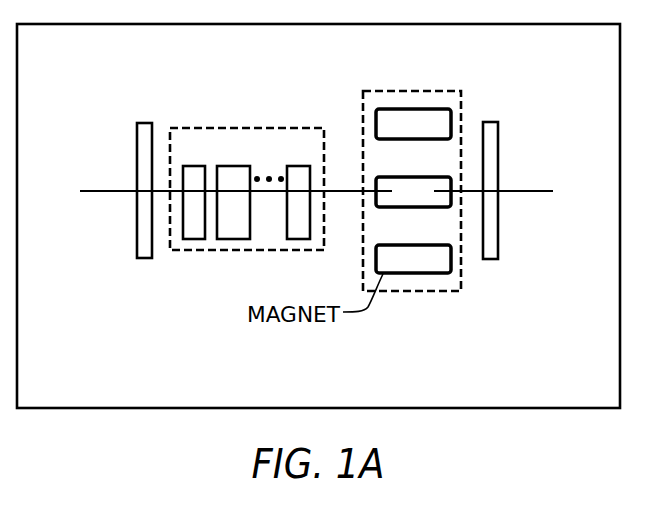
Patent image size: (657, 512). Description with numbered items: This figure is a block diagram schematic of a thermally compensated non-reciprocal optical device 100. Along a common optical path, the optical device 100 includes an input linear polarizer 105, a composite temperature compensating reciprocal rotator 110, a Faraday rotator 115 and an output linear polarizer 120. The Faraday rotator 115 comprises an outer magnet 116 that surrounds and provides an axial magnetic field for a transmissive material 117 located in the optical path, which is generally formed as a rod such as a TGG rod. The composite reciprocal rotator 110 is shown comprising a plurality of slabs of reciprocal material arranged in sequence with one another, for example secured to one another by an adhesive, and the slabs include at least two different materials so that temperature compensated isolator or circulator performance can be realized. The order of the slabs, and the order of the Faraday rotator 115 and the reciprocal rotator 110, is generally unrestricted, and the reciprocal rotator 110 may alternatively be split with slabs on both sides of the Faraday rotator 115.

The thermally compensated non-reciprocal optical device 100 is at (603, 468).
The input linear polarizer 105 is at (137, 157).
The composite temperature compensating reciprocal rotator 110 is at (257, 251).
The Faraday rotator 115 is at (425, 291).
The outer magnet 116 is at (397, 133).
The transmissive material 117 is at (397, 201).
The output linear polarizer 120 is at (498, 152).